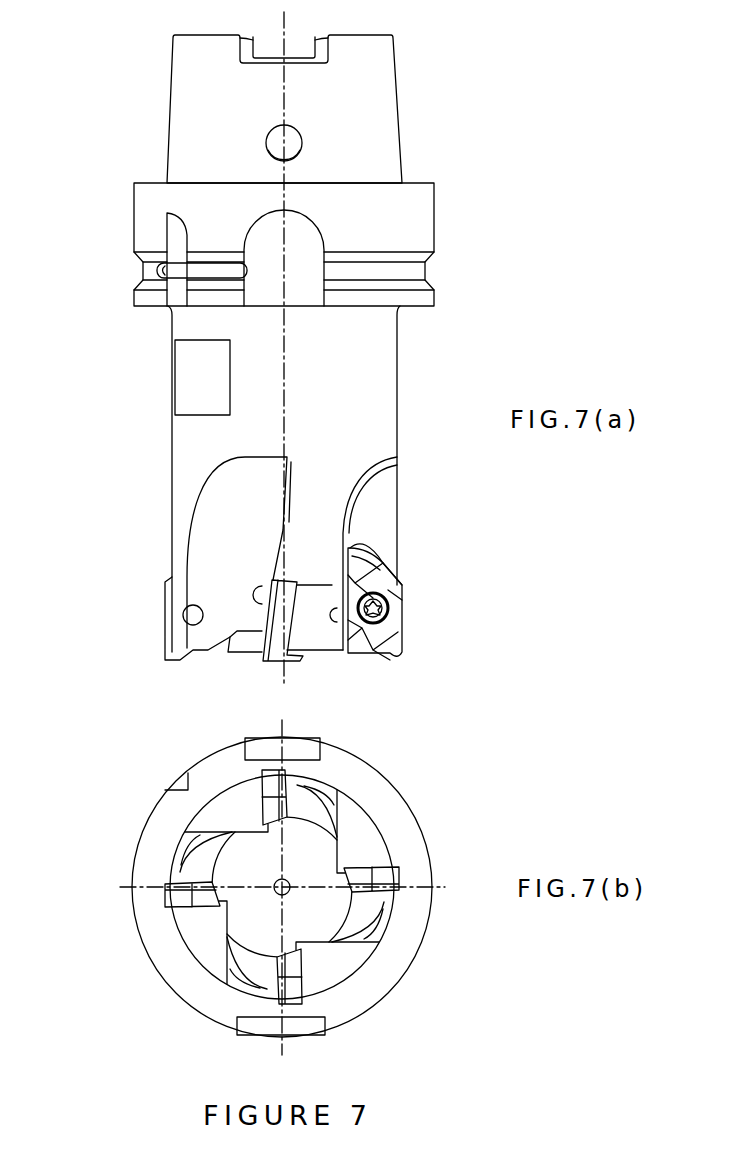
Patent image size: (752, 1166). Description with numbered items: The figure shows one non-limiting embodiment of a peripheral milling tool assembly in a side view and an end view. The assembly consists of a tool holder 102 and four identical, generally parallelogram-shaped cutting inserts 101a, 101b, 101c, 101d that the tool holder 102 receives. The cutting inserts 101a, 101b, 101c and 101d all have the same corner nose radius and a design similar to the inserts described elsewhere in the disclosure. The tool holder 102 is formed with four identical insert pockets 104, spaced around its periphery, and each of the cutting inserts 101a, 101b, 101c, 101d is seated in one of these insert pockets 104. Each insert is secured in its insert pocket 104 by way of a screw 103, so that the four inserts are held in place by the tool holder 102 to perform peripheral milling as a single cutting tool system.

In FIG. 7B, the cutting insert 101a is at (385, 878).
In FIG. 7B, the cutting insert 101b is at (263, 777).
In FIG. 7B, the cutting insert 101c is at (178, 896).
In FIG. 7B, the cutting insert 101d is at (292, 992).
In FIG. 7A, the tool holder 102 is at (205, 440).
In FIG. 7A, the screw 103 is at (393, 612).
In FIG. 7A, the insert pocket 104 is at (388, 545).